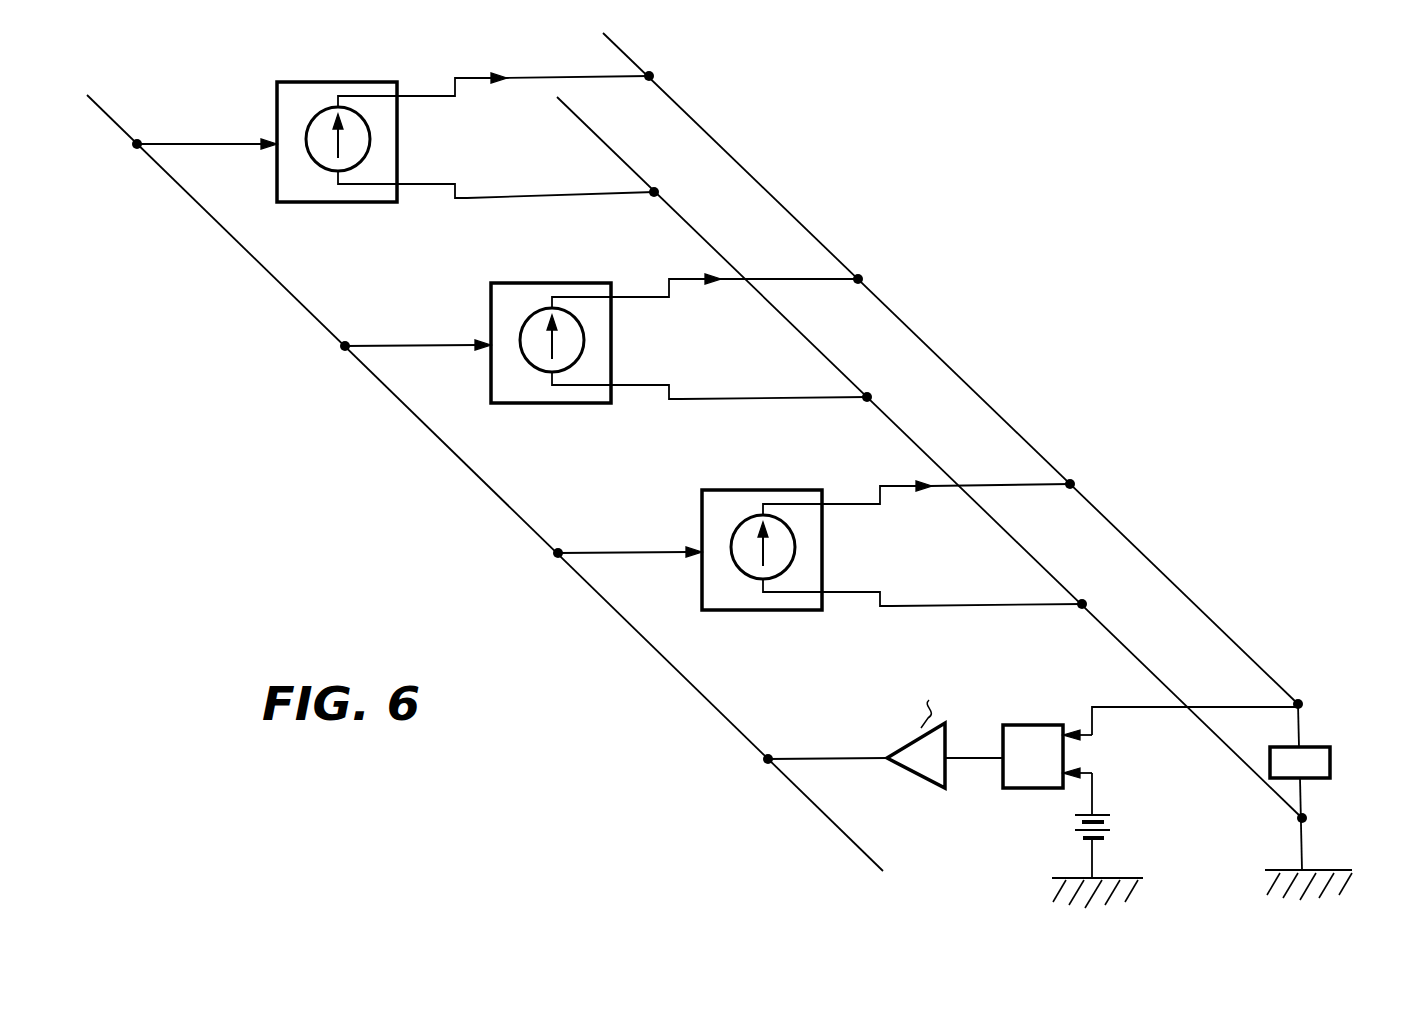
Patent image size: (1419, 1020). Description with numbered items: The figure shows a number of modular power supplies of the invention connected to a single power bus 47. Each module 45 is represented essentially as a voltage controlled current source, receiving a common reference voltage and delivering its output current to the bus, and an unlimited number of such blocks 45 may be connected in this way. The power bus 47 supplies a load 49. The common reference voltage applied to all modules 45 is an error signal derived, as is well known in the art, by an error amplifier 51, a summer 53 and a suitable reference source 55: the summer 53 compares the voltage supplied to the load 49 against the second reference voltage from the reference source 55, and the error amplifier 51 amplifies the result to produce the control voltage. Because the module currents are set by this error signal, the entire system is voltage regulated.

The module 45 is at (334, 81).
The power bus 47 is at (1017, 432).
The load 49 is at (1332, 760).
The error amplifier 51 is at (918, 774).
The summer 53 is at (1035, 724).
The reference source 55 is at (1078, 818).